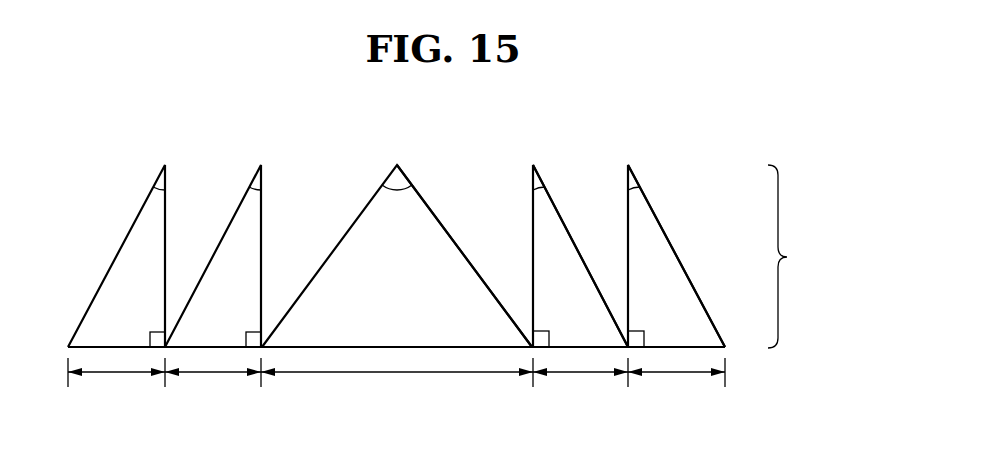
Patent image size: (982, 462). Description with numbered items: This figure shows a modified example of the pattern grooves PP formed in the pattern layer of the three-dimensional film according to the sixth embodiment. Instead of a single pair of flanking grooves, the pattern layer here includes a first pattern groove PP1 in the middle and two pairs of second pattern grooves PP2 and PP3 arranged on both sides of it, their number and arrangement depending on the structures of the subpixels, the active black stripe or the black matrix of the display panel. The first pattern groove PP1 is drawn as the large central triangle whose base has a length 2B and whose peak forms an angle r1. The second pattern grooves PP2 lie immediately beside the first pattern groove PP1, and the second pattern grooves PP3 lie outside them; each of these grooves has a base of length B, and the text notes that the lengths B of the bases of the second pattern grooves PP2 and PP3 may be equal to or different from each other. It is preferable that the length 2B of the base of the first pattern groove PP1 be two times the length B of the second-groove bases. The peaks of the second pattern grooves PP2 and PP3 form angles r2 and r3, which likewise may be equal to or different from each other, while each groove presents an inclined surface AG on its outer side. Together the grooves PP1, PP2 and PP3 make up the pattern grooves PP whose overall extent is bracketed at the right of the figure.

The first pattern groove PP1 is at (417, 188).
The second pattern groove PP2 is at (547, 188).
The second pattern groove PP3 is at (643, 188).
The pattern grooves PP is at (792, 256).
The inclined surface of pattern groove AG is at (448, 245).
The angle of the peak of the first pattern groove r1 is at (397, 204).
The angle of the peak of the second pattern groove r2 is at (361, 256).
The angle of the peak of the second pattern groove r3 is at (360, 256).
The length of the base of the second pattern groove B is at (396, 378).
The length of the base of the first pattern groove 2B is at (397, 383).